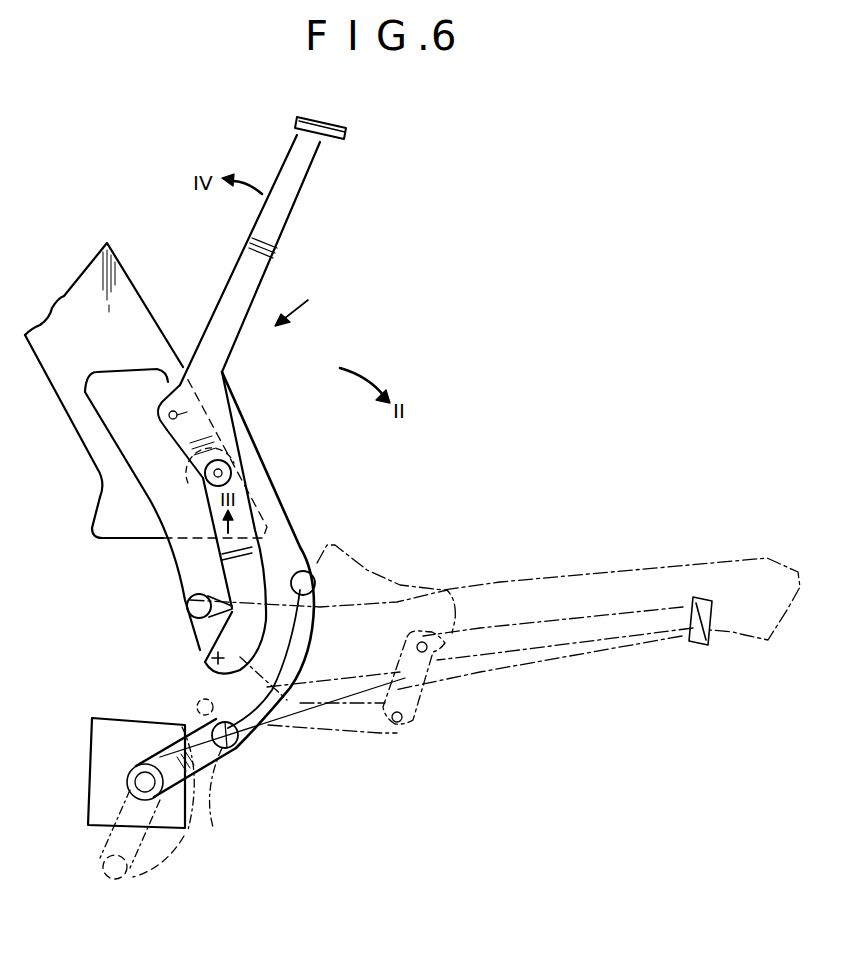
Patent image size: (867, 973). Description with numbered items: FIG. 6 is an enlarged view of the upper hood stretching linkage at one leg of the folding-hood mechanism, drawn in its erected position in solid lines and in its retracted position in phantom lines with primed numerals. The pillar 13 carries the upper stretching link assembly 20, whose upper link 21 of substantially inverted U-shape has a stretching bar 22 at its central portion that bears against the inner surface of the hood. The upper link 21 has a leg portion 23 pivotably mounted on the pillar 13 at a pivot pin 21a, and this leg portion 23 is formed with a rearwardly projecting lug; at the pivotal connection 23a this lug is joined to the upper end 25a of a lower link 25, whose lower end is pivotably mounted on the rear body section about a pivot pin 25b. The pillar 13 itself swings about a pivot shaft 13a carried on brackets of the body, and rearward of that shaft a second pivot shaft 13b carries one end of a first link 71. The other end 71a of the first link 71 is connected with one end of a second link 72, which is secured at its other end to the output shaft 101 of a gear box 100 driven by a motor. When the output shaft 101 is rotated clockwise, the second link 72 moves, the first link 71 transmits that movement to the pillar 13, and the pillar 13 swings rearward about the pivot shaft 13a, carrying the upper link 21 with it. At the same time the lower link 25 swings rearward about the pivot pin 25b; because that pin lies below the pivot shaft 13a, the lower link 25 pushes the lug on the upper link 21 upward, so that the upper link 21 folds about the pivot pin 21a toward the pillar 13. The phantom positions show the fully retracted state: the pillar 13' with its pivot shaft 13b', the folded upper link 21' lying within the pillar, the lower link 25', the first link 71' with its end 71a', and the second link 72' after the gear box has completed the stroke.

The pillar 13 is at (169, 495).
The pivot shaft 13a is at (186, 606).
The pivot shaft 13b is at (335, 554).
The pivot shaft (retracted position) 13b' is at (211, 685).
The pillar (retracted position) 13' is at (495, 624).
The upper stretching link assembly 20 is at (306, 307).
The upper link 21 is at (258, 260).
The pivot pin 21a is at (196, 412).
The upper link (retracted position) 21' is at (553, 651).
The stretching bar 22 is at (340, 122).
The leg portion 23 is at (222, 432).
The link pivot 23a is at (232, 468).
The lower link 25 is at (250, 523).
The link upper end 25a is at (196, 481).
The pivot pin 25b is at (207, 654).
The lower link (retracted position) 25' is at (302, 694).
The first link 71 is at (262, 675).
The other end of first link 71a is at (247, 763).
The first link (retracted position) 71' is at (229, 791).
The other end of first link (retracted position) 71a' is at (137, 893).
The second link 72 is at (186, 740).
The second link (retracted position) 72' is at (112, 833).
The gear box 100 is at (115, 742).
The output shaft 101 is at (127, 776).